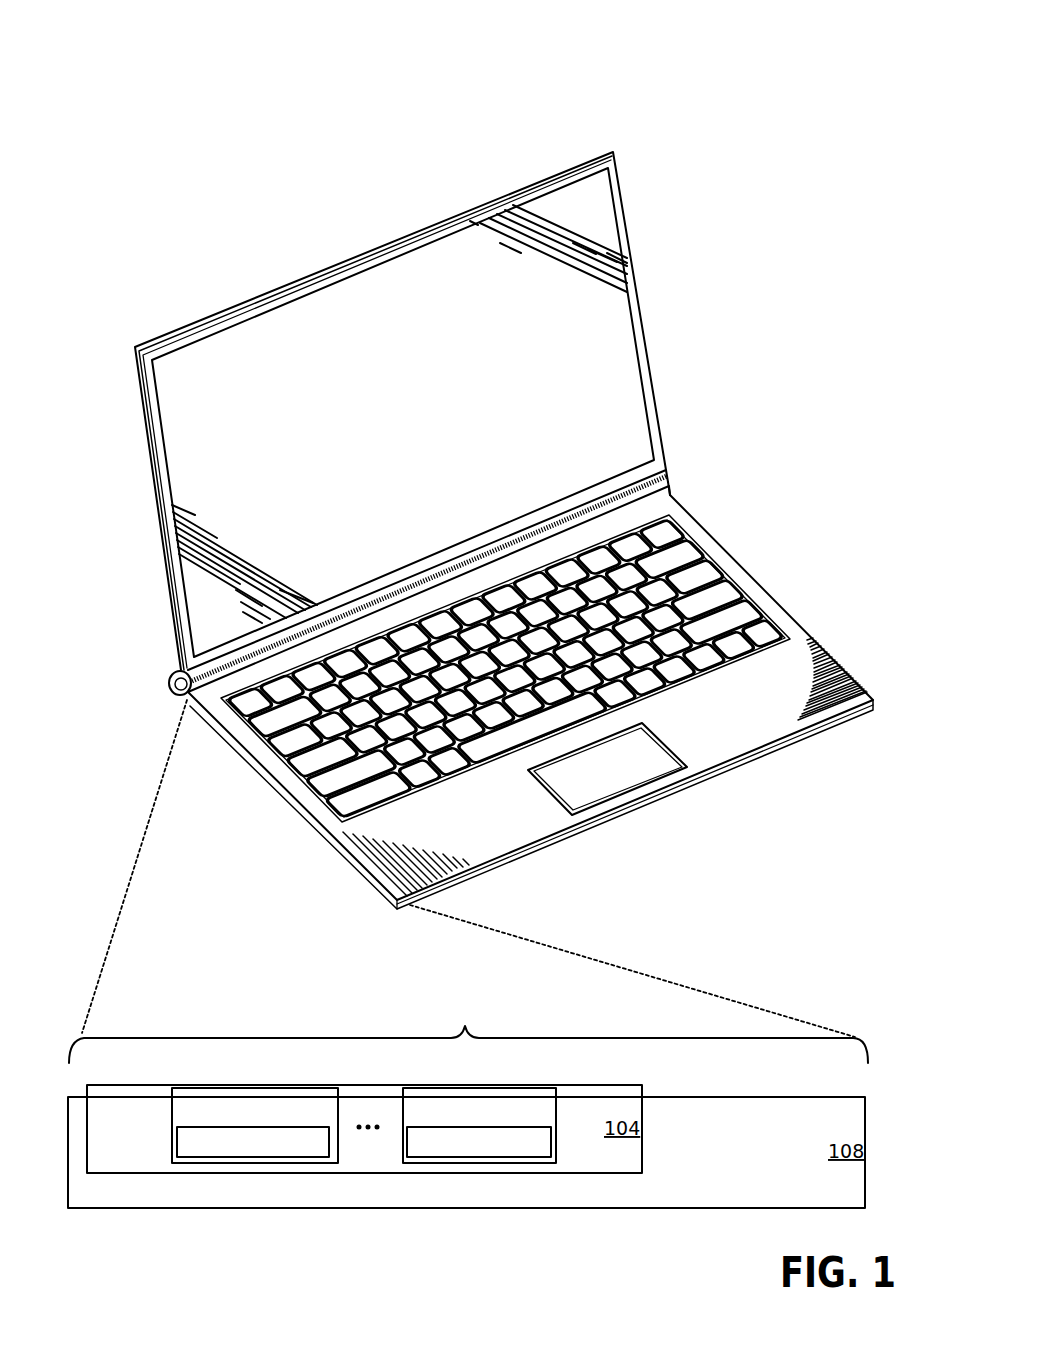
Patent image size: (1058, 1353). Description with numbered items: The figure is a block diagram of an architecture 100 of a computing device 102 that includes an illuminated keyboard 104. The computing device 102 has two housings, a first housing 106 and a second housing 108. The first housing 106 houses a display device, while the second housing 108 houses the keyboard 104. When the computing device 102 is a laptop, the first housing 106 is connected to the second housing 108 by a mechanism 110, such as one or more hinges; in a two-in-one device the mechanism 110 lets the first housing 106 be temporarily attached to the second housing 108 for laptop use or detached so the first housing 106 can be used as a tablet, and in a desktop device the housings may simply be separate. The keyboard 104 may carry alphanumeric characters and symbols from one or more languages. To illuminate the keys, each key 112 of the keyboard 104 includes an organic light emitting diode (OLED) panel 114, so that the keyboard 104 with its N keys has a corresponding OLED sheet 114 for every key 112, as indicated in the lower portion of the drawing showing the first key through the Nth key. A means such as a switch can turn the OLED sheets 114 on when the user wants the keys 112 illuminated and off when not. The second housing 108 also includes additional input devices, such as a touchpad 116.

The architecture 100 is at (136, 33).
The computing device 102 is at (749, 405).
The illuminated keyboard 104 is at (691, 499).
The first housing 106 is at (643, 328).
The second housing 108 is at (532, 855).
The mechanism 110 is at (670, 482).
The key 112 is at (364, 1125).
The organic light emitting diode (OLED) panel 114 is at (364, 1142).
The touchpad 116 is at (627, 792).